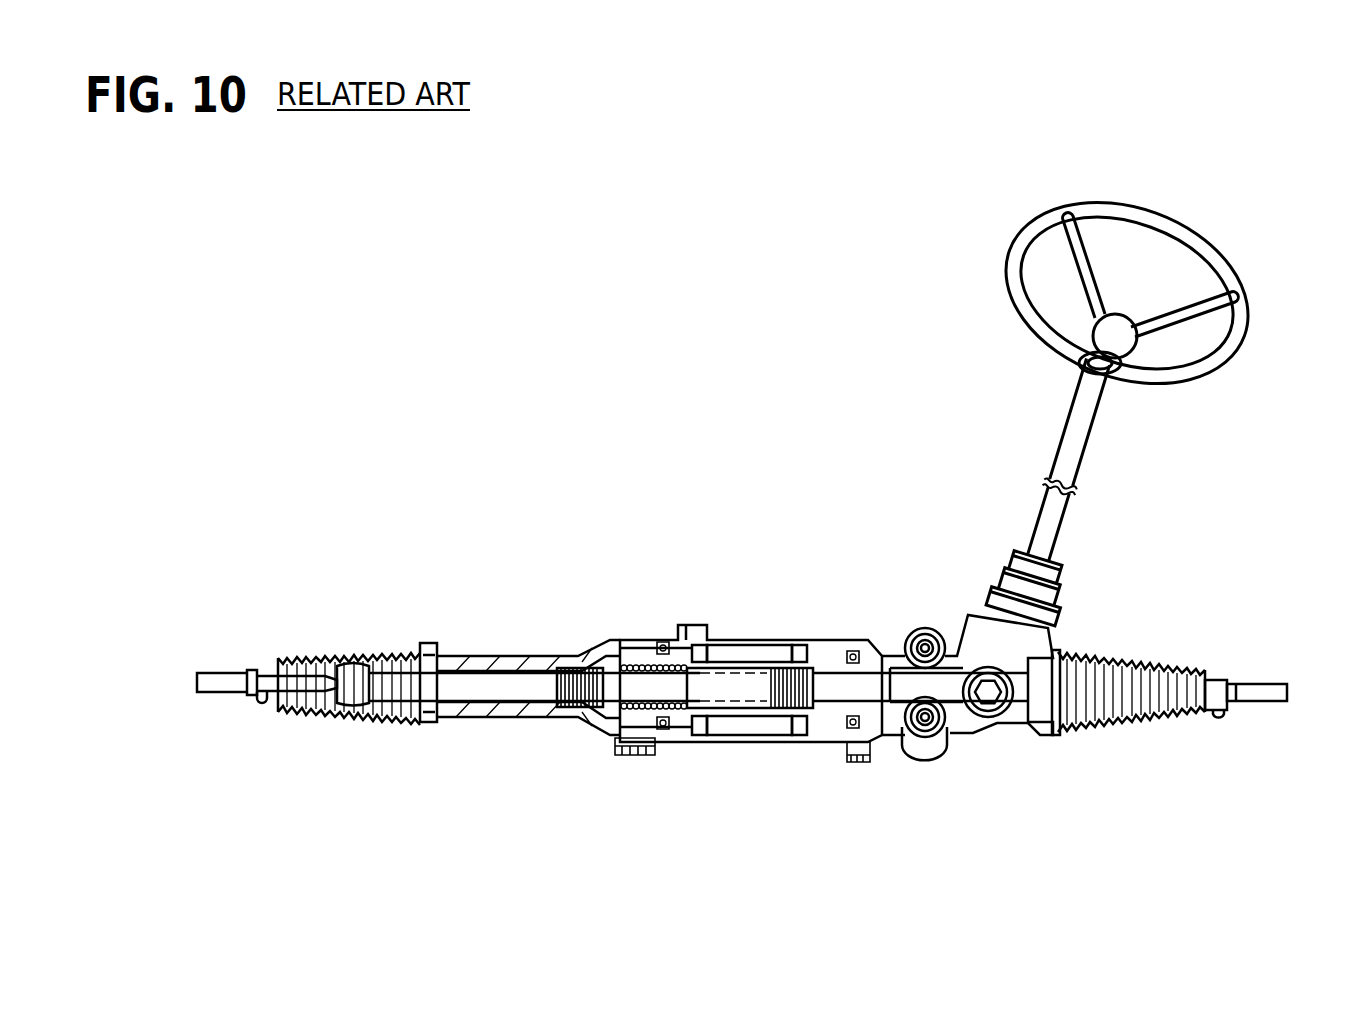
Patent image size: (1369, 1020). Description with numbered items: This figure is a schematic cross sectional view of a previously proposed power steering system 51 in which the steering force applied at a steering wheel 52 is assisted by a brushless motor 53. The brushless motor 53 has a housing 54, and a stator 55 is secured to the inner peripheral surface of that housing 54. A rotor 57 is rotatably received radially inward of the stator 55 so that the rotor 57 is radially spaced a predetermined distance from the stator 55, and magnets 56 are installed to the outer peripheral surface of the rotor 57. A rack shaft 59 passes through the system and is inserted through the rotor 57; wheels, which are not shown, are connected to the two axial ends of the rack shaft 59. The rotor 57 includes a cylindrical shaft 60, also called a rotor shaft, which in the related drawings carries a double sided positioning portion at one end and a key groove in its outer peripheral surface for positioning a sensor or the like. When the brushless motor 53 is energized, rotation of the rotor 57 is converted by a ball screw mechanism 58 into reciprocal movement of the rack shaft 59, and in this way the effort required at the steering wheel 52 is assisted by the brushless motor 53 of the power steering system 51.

The power steering system 51 is at (800, 312).
The steering wheel 52 is at (1183, 232).
The brushless motor 53 is at (760, 524).
The housing 54 is at (722, 640).
The stator 55 is at (750, 730).
The magnets 56 is at (770, 660).
The rotor 57 is at (820, 710).
The ball screw mechanism 58 is at (614, 640).
The rack shaft 59 is at (502, 692).
The cylindrical shaft 60 is at (613, 733).